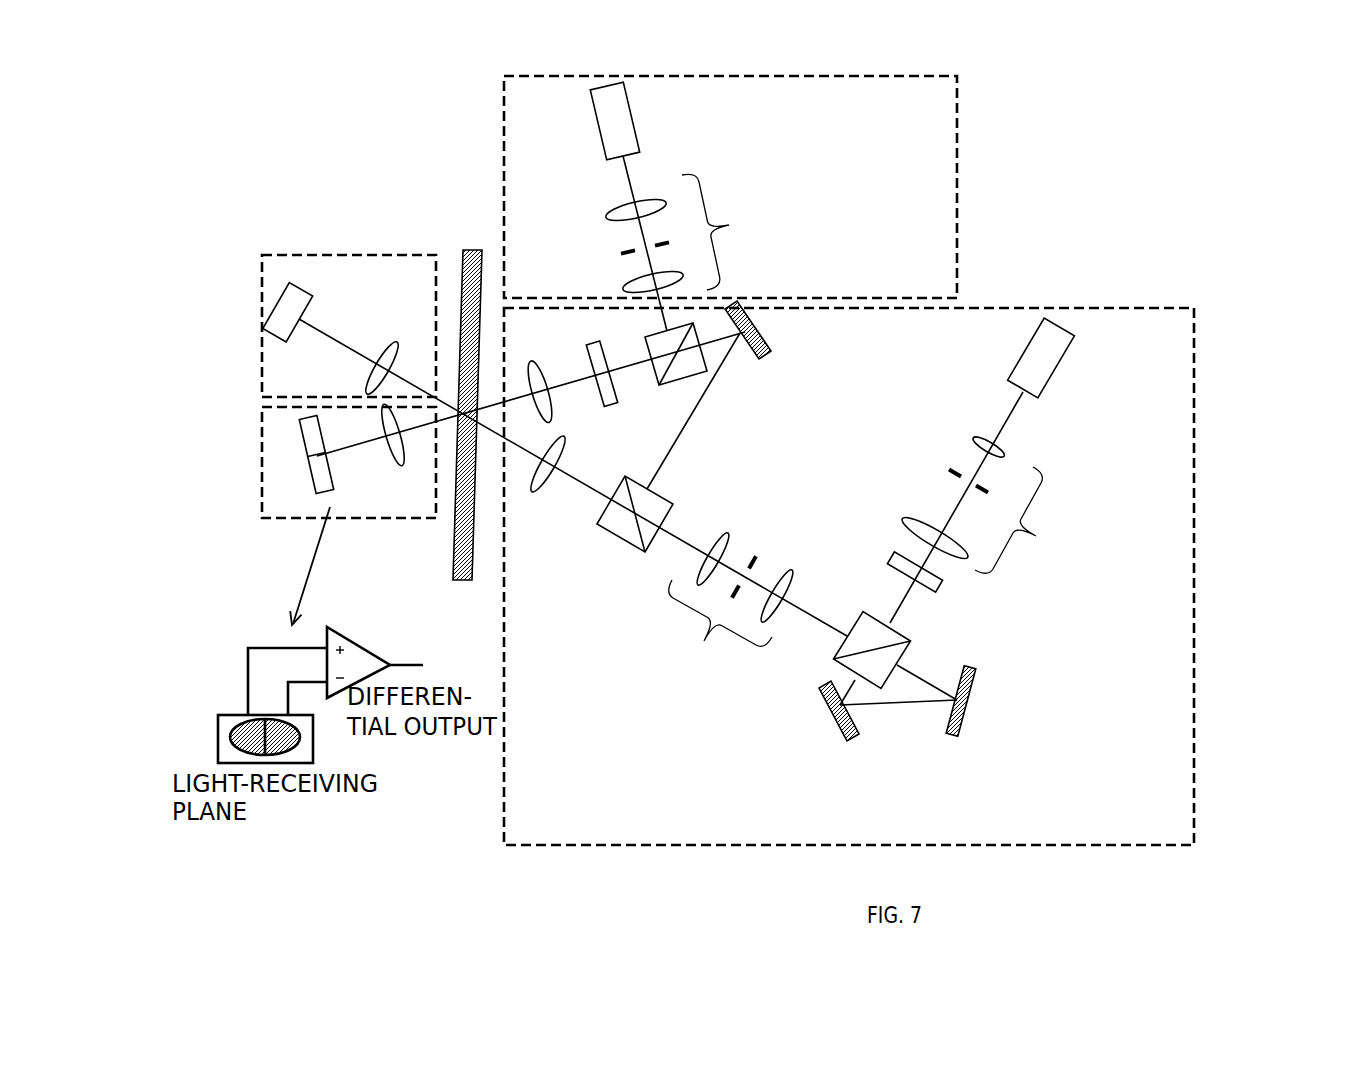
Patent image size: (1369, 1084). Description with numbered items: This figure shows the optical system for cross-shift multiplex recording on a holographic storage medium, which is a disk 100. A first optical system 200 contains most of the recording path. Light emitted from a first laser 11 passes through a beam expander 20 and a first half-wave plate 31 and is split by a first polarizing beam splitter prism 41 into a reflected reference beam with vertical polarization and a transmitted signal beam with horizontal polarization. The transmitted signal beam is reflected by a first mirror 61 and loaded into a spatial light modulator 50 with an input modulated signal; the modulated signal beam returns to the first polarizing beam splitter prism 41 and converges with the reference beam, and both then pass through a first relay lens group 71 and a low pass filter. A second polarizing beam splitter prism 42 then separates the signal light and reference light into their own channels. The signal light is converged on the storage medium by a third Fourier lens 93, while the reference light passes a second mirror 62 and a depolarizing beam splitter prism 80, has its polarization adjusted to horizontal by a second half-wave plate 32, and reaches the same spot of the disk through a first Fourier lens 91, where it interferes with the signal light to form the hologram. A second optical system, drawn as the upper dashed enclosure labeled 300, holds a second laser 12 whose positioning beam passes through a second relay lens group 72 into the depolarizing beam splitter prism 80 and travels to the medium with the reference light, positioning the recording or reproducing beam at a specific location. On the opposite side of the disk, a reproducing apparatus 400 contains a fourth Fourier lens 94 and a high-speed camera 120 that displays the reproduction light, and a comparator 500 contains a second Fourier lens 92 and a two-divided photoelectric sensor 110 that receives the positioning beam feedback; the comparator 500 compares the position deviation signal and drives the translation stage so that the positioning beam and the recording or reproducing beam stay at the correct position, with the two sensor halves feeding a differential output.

The first laser 11 is at (1075, 380).
The second laser 12 is at (667, 122).
The beam expander 20 is at (1042, 537).
The first half-wave plate 31 is at (953, 590).
The second half-wave plate 32 is at (590, 330).
The first polarizing beam splitter prism 41 is at (925, 640).
The second polarizing beam splitter prism 42 is at (617, 555).
The spatial light modulator 50 is at (982, 682).
The first mirror 61 is at (850, 755).
The second mirror 62 is at (770, 330).
The first relay lens group 71 is at (703, 650).
The second relay lens group 72 is at (737, 222).
The depolarizing beam splitter prism 80 is at (673, 393).
The first Fourier lens 91 is at (533, 347).
The second Fourier lens 92 is at (403, 475).
The third Fourier lens 93 is at (540, 508).
The fourth Fourier lens 94 is at (392, 337).
The disk 100 is at (472, 237).
The two-divided photoelectric sensor 110 is at (298, 478).
The high-speed camera 120 is at (303, 267).
The first optical system 200 is at (1194, 472).
The optical unit 300 is at (958, 116).
The reproducing apparatus 400 is at (262, 287).
The comparator 500 is at (262, 447).